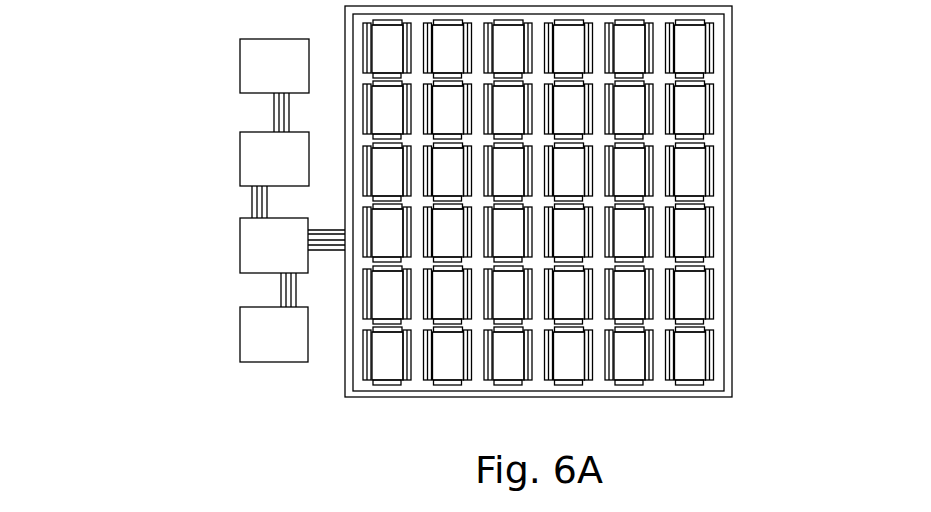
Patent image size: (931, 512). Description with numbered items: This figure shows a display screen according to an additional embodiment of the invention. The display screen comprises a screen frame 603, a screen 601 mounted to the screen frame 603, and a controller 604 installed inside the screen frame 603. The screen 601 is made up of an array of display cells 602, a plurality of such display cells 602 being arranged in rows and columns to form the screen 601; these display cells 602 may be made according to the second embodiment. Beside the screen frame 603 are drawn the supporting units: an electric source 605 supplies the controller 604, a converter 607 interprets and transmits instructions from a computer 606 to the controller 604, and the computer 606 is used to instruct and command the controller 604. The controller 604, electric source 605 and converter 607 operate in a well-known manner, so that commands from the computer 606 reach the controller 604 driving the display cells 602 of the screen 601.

The screen 601 is at (710, 373).
The display cell 602 is at (692, 287).
The screen frame 603 is at (722, 13).
The controller 604 is at (240, 253).
The electric source 605 is at (240, 335).
The computer 606 is at (240, 77).
The converter 607 is at (240, 160).